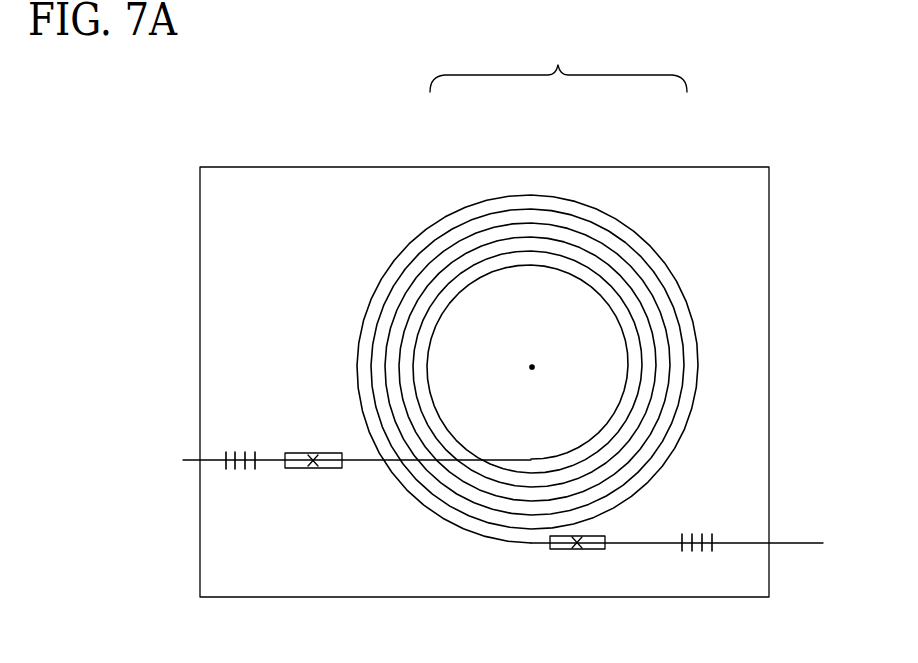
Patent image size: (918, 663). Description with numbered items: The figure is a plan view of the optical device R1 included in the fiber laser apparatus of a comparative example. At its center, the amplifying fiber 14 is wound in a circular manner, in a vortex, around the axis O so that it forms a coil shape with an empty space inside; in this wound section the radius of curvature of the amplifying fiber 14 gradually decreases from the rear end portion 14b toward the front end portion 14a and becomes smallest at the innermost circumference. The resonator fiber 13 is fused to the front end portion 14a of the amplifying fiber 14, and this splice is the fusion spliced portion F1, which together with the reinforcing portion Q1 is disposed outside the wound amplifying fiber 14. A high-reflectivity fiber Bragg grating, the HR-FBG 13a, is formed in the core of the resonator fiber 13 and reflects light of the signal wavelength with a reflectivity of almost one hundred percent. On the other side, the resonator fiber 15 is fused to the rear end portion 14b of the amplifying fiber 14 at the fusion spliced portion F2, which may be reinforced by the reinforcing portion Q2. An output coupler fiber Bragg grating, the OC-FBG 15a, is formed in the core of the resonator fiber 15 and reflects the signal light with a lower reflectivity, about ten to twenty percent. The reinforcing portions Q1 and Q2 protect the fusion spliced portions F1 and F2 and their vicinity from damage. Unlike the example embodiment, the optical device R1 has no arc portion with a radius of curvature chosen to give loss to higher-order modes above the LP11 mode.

The optical device R1 is at (558, 61).
The resonator fiber 13 is at (268, 438).
The amplifying fiber 14 is at (533, 167).
The resonator fiber 15 is at (745, 518).
The axis O is at (532, 366).
The HR-FBG 13a is at (234, 468).
The OC-FBG 15a is at (703, 551).
The reinforcing portion Q1 is at (338, 511).
The reinforcing portion Q2 is at (607, 572).
The fusion spliced portion F1 is at (347, 549).
The fusion spliced portion F2 is at (582, 590).
The front end portion 14a is at (312, 468).
The rear end portion 14b is at (578, 549).